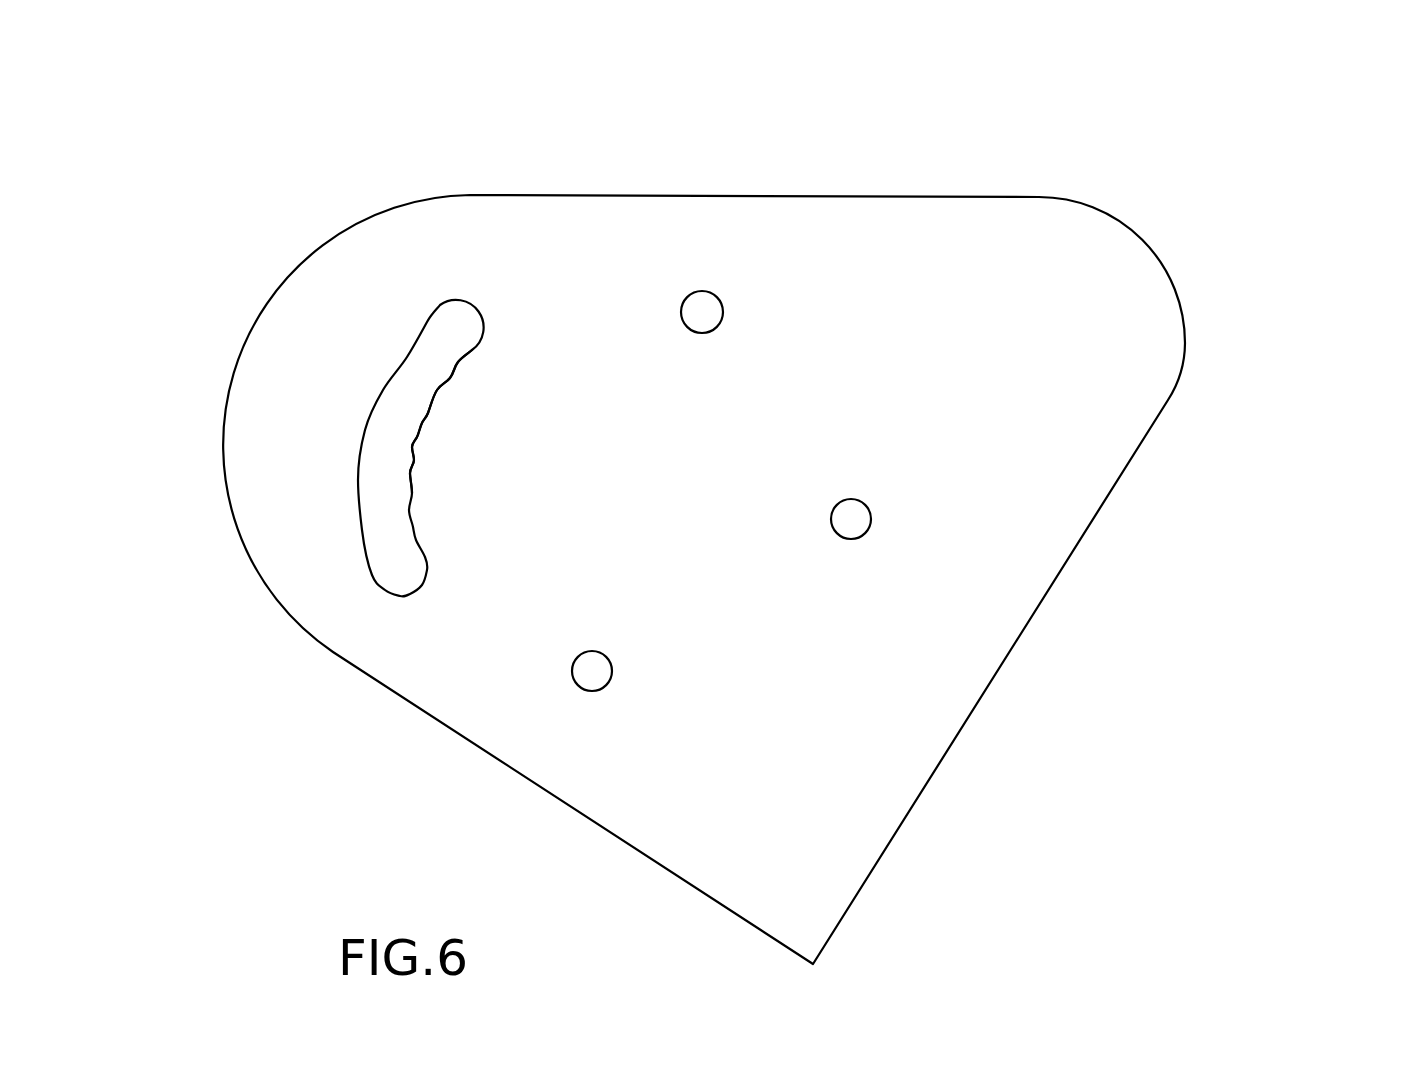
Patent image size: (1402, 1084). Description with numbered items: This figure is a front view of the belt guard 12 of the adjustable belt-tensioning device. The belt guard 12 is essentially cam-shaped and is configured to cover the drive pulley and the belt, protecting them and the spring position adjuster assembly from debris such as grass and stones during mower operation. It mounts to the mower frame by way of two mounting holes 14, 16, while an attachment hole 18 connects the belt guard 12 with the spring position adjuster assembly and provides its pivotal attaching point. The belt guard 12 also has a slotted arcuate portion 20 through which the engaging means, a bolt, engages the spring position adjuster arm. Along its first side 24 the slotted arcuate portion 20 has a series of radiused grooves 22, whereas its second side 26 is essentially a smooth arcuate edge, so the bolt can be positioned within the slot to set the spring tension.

The belt guard 12 is at (1193, 217).
The mounting hole 14 is at (702, 303).
The mounting hole 16 is at (592, 672).
The attachment hole 18 is at (860, 514).
The slotted arcuate portion 20 is at (445, 322).
The radiused grooves 22 is at (423, 420).
The first side 24 is at (430, 400).
The second side 26 is at (430, 398).